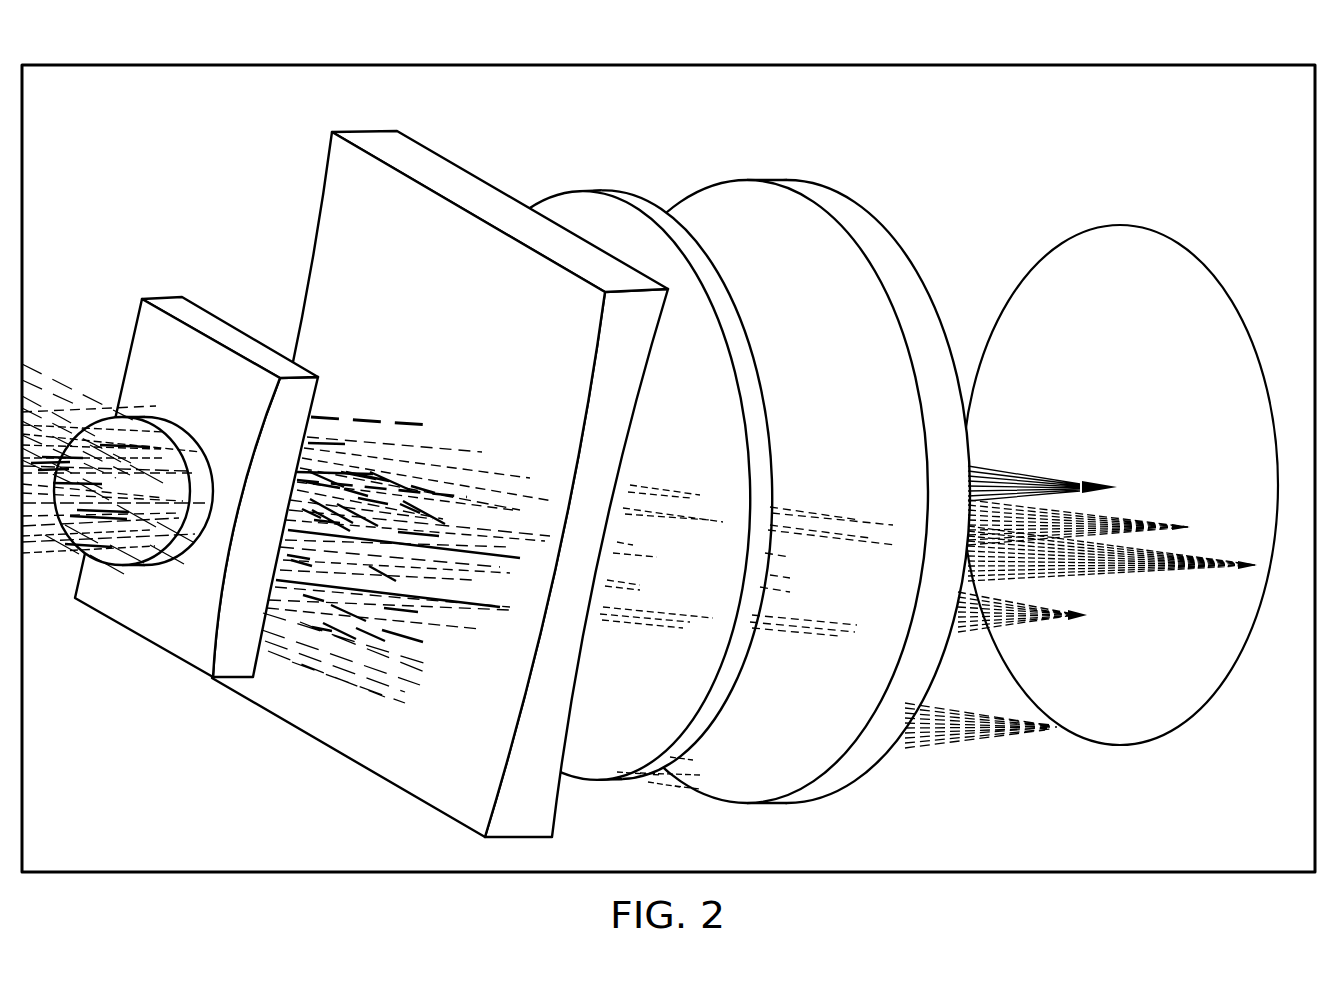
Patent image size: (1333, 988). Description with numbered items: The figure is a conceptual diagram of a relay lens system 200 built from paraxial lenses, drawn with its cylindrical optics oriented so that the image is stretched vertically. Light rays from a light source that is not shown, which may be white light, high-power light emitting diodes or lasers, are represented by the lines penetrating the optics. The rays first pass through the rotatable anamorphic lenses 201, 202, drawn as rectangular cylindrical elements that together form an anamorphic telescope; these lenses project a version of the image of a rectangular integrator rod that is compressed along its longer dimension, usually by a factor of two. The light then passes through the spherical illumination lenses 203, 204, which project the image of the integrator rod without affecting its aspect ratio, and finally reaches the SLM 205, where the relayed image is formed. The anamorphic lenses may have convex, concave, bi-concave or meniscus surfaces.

The relay lens system 200 is at (1012, 62).
The anamorphic lens 201 is at (165, 297).
The anamorphic lens 202 is at (366, 131).
The spherical illumination lens 203 is at (578, 191).
The spherical illumination lens 204 is at (768, 181).
The SLM 205 is at (1120, 225).